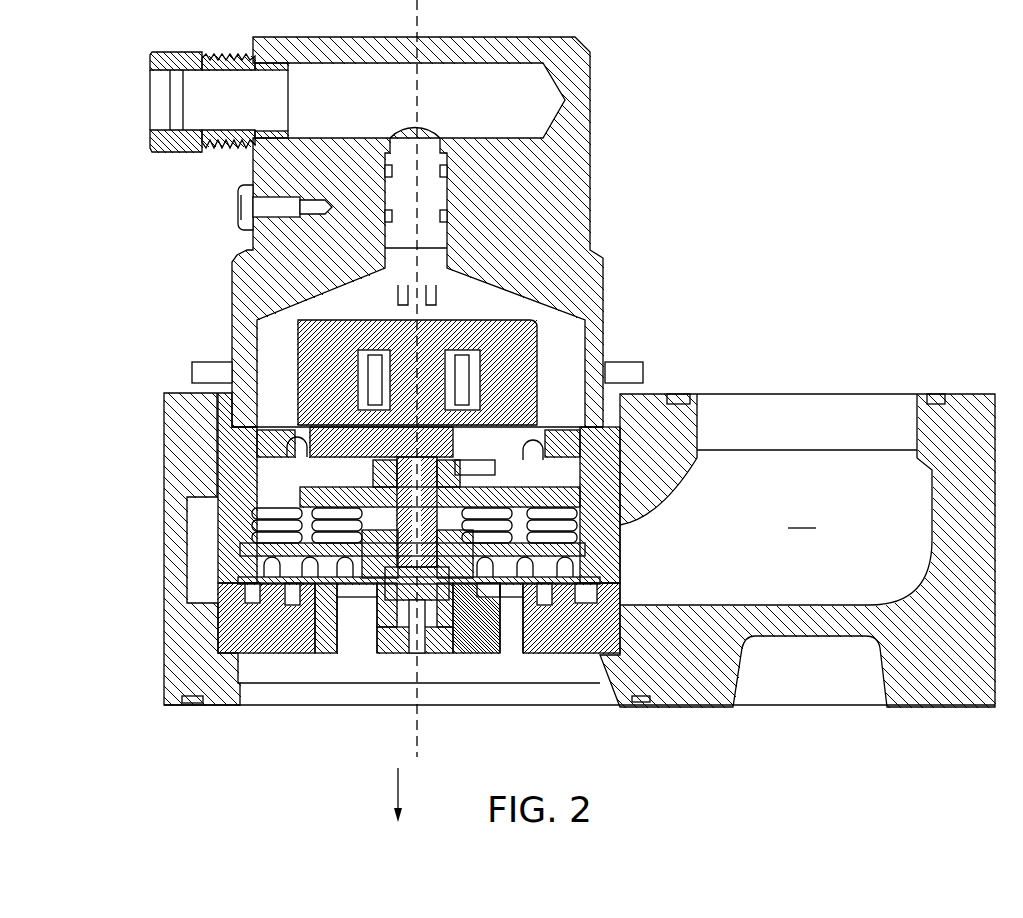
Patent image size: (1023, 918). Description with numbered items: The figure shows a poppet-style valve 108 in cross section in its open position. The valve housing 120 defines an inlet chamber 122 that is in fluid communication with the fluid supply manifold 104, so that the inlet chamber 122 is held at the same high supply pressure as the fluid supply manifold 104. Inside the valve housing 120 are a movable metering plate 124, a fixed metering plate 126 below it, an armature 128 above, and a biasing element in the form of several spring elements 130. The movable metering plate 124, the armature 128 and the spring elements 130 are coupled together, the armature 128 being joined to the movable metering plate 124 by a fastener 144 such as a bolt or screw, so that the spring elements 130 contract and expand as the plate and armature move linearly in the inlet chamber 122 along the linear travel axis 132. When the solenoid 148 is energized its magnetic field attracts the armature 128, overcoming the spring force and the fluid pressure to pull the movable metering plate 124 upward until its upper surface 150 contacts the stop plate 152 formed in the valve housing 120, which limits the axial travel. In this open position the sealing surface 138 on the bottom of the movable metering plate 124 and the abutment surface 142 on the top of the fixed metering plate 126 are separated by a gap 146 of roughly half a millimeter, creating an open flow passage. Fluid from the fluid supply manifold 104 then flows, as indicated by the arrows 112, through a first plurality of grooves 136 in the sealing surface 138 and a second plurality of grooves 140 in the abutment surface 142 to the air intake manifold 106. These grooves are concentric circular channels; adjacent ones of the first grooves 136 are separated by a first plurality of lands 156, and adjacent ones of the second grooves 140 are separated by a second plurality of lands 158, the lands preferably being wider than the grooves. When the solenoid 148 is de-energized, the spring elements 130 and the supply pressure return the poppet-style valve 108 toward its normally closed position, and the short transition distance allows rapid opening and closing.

The fluid supply manifold 104 is at (795, 480).
The air intake manifold 106 is at (321, 807).
The poppet-style valve 108 is at (766, 291).
The arrows 112 is at (334, 640).
The valve housing 120 is at (146, 355).
The inlet chamber 122 is at (233, 553).
The movable metering plate 124 is at (220, 503).
The fixed metering plate 126 is at (215, 637).
The armature 128 is at (515, 432).
The spring elements 130 is at (632, 412).
The linear travel axis 132 is at (421, 16).
The first plurality of grooves 136 is at (238, 650).
The sealing surface 138 is at (273, 655).
The second plurality of grooves 140 is at (217, 603).
The abutment surface 142 is at (250, 592).
The fastener 144 is at (393, 655).
The gap 146 is at (602, 580).
The solenoid 148 is at (470, 358).
The upper surface 150 is at (393, 500).
The stop plate 152 is at (700, 455).
The first plurality of lands 156 is at (217, 572).
The second plurality of lands 158 is at (320, 657).